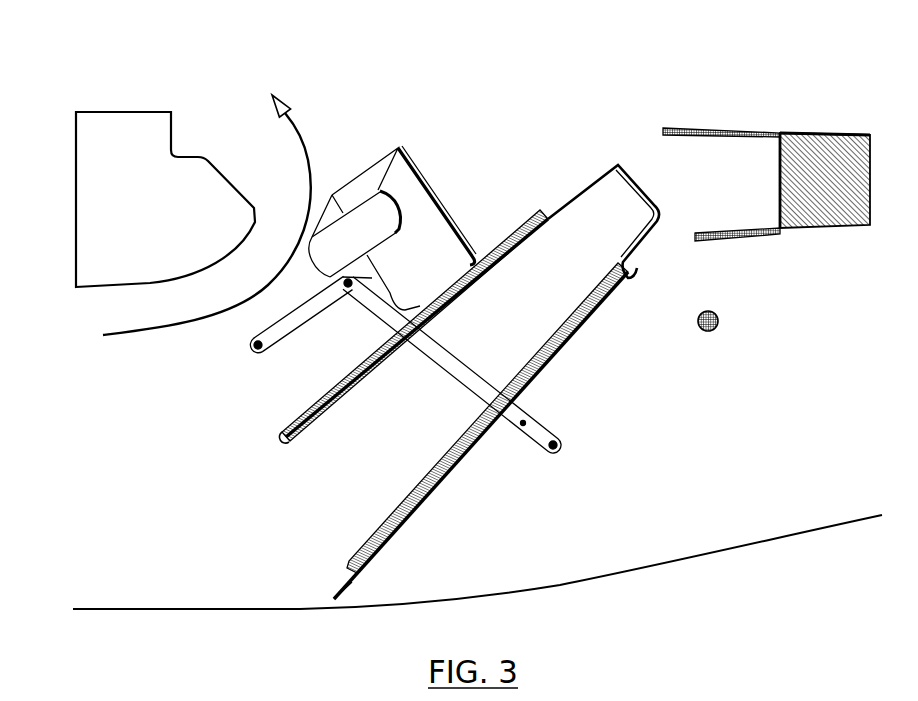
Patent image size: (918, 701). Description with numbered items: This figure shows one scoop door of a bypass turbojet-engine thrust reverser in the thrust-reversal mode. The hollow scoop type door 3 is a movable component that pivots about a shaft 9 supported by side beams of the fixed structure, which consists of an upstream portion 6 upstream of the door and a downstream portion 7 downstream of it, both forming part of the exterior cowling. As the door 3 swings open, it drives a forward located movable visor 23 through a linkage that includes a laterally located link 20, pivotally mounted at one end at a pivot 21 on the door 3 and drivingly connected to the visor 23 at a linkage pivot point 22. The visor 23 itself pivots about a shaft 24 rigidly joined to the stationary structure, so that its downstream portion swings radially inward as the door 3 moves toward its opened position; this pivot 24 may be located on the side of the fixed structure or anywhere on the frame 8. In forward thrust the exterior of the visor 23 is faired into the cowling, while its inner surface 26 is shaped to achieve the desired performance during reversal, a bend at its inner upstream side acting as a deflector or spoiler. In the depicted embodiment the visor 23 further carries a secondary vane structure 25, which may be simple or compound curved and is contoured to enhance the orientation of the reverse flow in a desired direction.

The scoop door 3 is at (555, 238).
The upstream portion 6 is at (96, 92).
The downstream portion 7 is at (797, 146).
The frame 8 is at (104, 188).
The shaft 9 is at (710, 331).
The link 20 is at (523, 426).
The pivot 21 is at (556, 432).
The linkage pivot point 22 is at (348, 290).
The visor 23 is at (402, 147).
The shaft 24 is at (257, 350).
The secondary vane structure 25 is at (380, 190).
The inner surface 26 is at (440, 234).